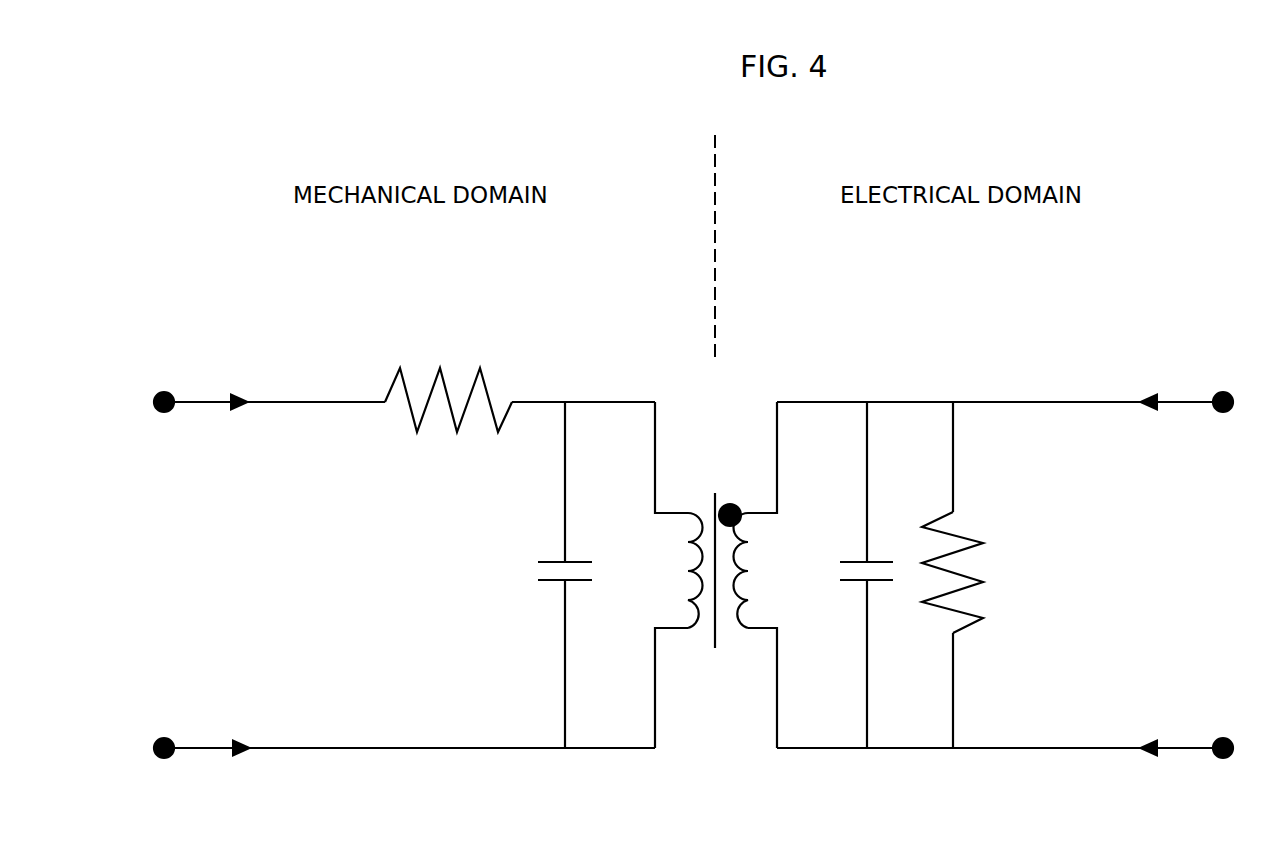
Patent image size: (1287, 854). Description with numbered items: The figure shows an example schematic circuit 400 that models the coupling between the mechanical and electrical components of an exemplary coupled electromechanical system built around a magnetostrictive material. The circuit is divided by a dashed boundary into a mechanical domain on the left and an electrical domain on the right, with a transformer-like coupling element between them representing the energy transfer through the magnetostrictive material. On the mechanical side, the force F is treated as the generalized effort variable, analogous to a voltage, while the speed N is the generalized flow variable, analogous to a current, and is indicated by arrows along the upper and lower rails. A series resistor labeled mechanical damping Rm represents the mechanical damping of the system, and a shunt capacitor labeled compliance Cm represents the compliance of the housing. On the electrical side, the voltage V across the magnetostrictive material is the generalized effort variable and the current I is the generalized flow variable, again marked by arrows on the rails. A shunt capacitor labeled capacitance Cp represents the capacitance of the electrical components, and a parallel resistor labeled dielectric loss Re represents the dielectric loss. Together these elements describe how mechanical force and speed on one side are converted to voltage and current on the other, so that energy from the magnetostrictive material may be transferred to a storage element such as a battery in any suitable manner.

The schematic circuit 400 is at (1160, 154).
The speed N is at (235, 421).
The force F is at (180, 575).
The mechanical damping Rm is at (448, 430).
The compliance of the housing Cm is at (586, 575).
The capacitance Cp is at (845, 575).
The dielectric loss Re is at (982, 575).
The current I is at (1168, 390).
The voltage V is at (1173, 575).